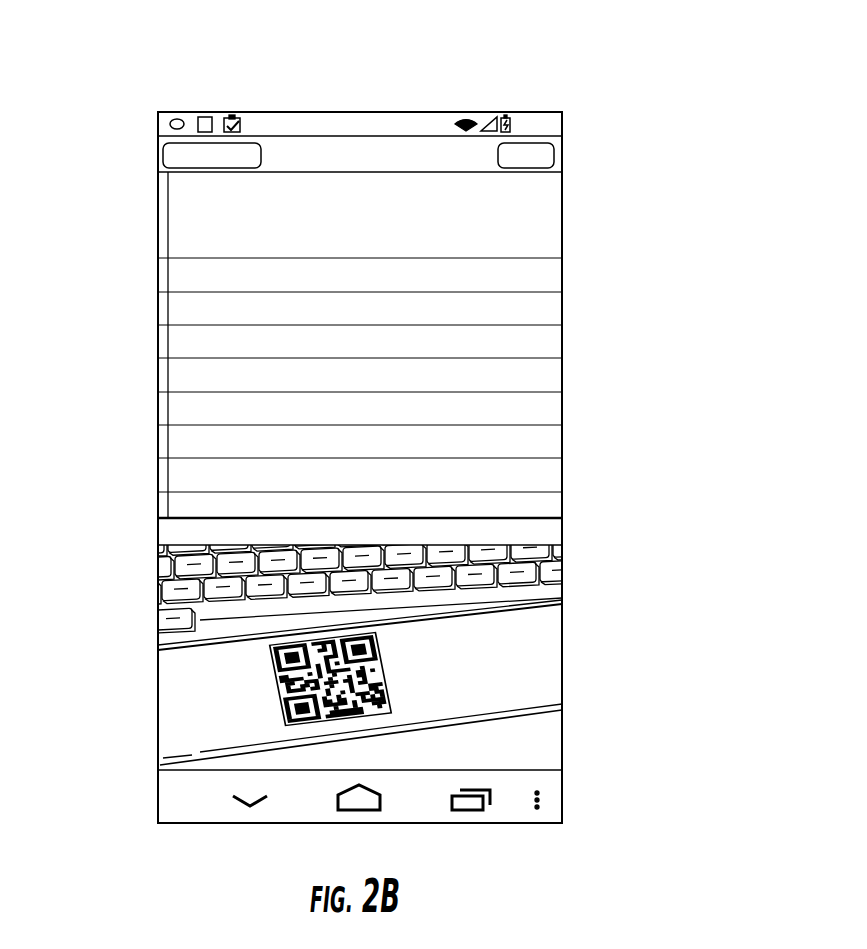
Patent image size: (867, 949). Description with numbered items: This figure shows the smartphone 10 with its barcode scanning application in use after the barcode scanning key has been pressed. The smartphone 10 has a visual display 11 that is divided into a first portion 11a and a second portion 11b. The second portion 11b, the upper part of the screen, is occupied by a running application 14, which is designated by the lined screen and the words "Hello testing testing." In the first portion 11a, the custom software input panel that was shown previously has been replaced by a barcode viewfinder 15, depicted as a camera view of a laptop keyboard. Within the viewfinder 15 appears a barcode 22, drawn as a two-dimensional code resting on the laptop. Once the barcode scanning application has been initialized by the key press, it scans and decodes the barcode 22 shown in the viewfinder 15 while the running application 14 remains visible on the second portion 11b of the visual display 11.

The smartphone 10 is at (600, 137).
The visual display 11 is at (530, 410).
The first portion 11a is at (520, 643).
The second portion 11b is at (512, 315).
The running application 14 is at (195, 244).
The barcode viewfinder 15 is at (257, 645).
The barcode 22 is at (273, 687).